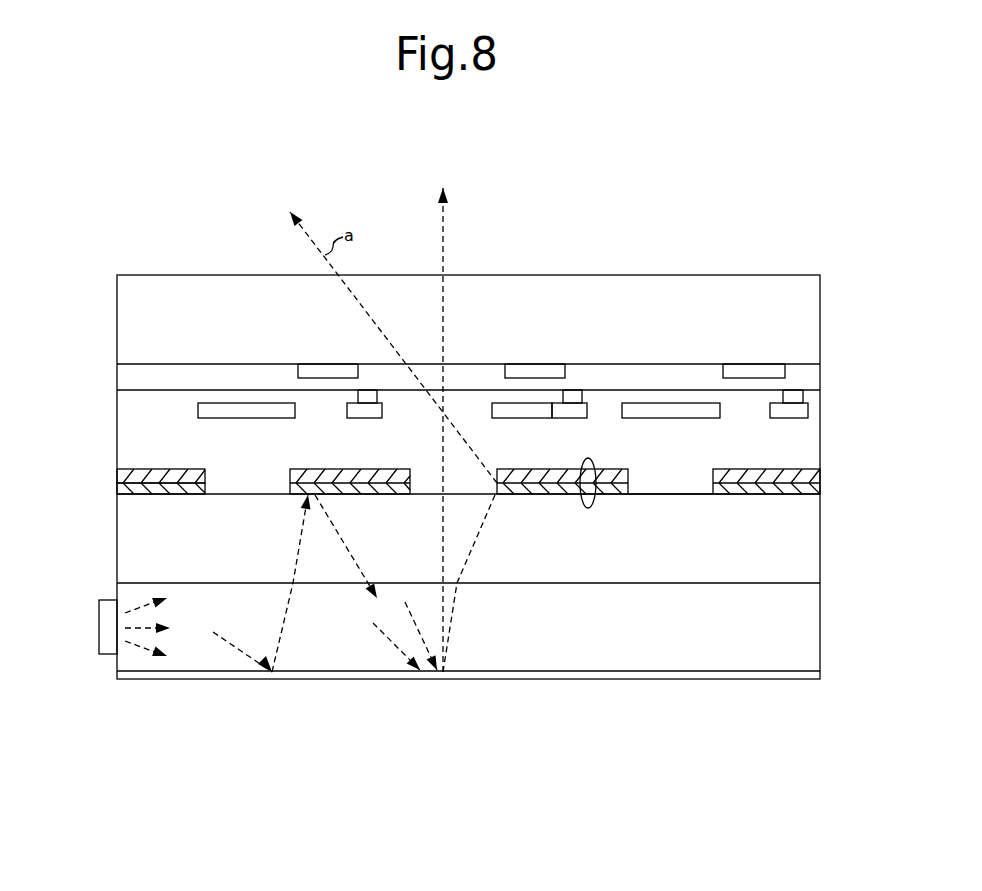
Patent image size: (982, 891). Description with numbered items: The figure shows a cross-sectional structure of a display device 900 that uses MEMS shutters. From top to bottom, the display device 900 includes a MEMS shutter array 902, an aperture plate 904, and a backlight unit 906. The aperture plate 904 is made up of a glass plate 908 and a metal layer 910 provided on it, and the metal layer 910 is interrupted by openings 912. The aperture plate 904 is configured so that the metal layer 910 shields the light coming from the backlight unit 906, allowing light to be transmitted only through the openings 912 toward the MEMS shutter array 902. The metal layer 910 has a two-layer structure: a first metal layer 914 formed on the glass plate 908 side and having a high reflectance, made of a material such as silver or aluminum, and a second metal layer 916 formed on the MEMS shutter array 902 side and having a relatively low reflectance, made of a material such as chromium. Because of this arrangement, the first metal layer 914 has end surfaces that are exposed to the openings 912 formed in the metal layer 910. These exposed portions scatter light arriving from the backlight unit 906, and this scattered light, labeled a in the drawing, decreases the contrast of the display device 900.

The display device 900 is at (198, 210).
The MEMS shutter array 902 is at (827, 275).
The aperture plate 904 is at (827, 465).
The backlight unit 906 is at (827, 678).
The glass plate 908 is at (720, 563).
The metal layer 910 is at (588, 508).
The openings 912 is at (667, 497).
The first metal layer 914 is at (146, 494).
The second metal layer 916 is at (146, 472).